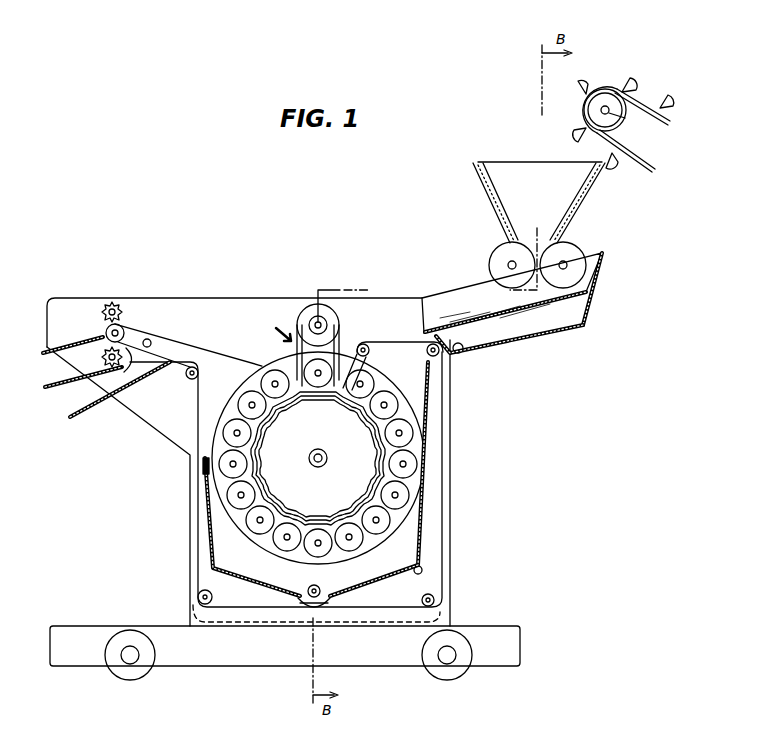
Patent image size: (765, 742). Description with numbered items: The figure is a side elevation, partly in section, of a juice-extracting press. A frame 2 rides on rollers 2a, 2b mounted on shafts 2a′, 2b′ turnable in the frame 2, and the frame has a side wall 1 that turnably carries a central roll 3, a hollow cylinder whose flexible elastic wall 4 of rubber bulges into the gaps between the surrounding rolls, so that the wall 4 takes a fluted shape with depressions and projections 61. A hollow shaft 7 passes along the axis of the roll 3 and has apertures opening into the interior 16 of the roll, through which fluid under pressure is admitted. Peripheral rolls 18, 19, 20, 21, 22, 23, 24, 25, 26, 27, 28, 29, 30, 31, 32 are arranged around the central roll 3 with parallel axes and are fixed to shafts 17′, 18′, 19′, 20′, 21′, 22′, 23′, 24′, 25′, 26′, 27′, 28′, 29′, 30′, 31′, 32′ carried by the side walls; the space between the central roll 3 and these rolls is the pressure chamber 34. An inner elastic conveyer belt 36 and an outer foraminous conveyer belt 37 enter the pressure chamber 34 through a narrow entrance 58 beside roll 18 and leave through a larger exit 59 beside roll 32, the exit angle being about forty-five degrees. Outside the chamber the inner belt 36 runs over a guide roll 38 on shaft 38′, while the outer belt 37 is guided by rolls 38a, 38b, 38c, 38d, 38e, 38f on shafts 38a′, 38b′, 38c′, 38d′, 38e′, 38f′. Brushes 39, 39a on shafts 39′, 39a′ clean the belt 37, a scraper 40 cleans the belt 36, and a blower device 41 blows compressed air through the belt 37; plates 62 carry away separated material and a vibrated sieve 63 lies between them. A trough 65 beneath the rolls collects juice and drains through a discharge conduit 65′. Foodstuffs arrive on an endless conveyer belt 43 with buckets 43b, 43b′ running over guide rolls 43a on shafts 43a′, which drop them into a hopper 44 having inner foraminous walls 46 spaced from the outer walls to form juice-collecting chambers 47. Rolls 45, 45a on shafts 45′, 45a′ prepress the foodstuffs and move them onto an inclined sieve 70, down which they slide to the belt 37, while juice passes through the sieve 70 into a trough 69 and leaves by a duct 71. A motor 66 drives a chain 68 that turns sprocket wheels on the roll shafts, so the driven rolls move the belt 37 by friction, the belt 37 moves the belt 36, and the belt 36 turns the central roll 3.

The side wall 1 is at (48, 312).
The frame 2 is at (215, 660).
The roller 2a is at (433, 670).
The shaft 2a′ is at (455, 660).
The roller 2b is at (112, 668).
The shaft 2b′ is at (138, 661).
The central roll 3 is at (400, 410).
The flexible elastic wall 4 is at (338, 514).
The hollow shaft 7 is at (318, 449).
The interior of roll 16 is at (424, 456).
The shaft 17′ is at (315, 378).
The peripheral roll 18 is at (372, 380).
The shaft 18′ is at (357, 390).
The peripheral roll 19 is at (396, 398).
The shaft 19′ is at (378, 411).
The peripheral roll 20 is at (412, 432).
The shaft 20′ is at (392, 437).
The peripheral roll 21 is at (408, 488).
The shaft 21′ is at (400, 497).
The peripheral roll 22 is at (412, 472).
The shaft 22′ is at (397, 464).
The peripheral roll 23 is at (388, 526).
The shaft 23′ is at (378, 526).
The peripheral roll 24 is at (352, 550).
The shaft 24′ is at (349, 532).
The peripheral roll 25 is at (320, 557).
The shaft 25′ is at (318, 538).
The peripheral roll 26 is at (288, 551).
The shaft 26′ is at (283, 542).
The peripheral roll 27 is at (254, 534).
The shaft 27′ is at (266, 516).
The peripheral roll 28 is at (240, 509).
The shaft 28′ is at (248, 494).
The peripheral roll 29 is at (203, 466).
The shaft 29′ is at (240, 463).
The peripheral roll 30 is at (226, 430).
The shaft 30′ is at (244, 436).
The peripheral roll 31 is at (240, 402).
The shaft 31′ is at (250, 398).
The peripheral roll 32 is at (264, 375).
The shaft 32′ is at (272, 380).
The pressure chamber 34 is at (311, 508).
The inner conveyer belt 36 is at (296, 330).
The outer conveyer belt 37 is at (196, 346).
The guide roll 38 is at (320, 303).
The shaft 38′ is at (312, 306).
The guide roll 38a is at (370, 350).
The shaft 38a′ is at (364, 344).
The guide roll 38b is at (430, 355).
The shaft 38b′ is at (451, 355).
The guide roll 38c is at (445, 607).
The shaft 38c′ is at (435, 597).
The guide roll 38d is at (197, 598).
The shaft 38d′ is at (212, 596).
The guide roll 38e is at (186, 375).
The shaft 38e′ is at (192, 381).
The guide roll 38f is at (106, 333).
The shaft 38f′ is at (124, 331).
The brush 39 is at (118, 304).
The shaft 39′ is at (108, 305).
The brush 39a is at (128, 360).
The shaft 39a′ is at (106, 357).
The scraper 40 is at (278, 325).
The blower device 41 is at (152, 342).
The endless conveyer belt 43 is at (583, 110).
The guide roll 43a is at (607, 92).
The shaft 43a′ is at (625, 118).
The bucket 43b is at (674, 103).
The paddle 43b′ is at (636, 85).
The hopper 44 is at (497, 162).
The roll 45 is at (500, 250).
The shaft 45′ is at (508, 265).
The roll 45a is at (576, 251).
The shaft 45a′ is at (568, 265).
The inner foraminous wall 46 is at (484, 188).
The chamber 47 is at (498, 212).
The entrance 58 is at (341, 350).
The exit 59 is at (283, 369).
The depressions and projections 61 is at (272, 414).
The plate 62 is at (44, 351).
The sieve 63 is at (72, 383).
The trough 65 is at (422, 567).
The discharge conduit 65′ is at (303, 612).
The motor 66 is at (316, 600).
The chain 68 is at (352, 590).
The trough 69 is at (580, 324).
The sieve 70 is at (588, 296).
The duct 71 is at (462, 346).